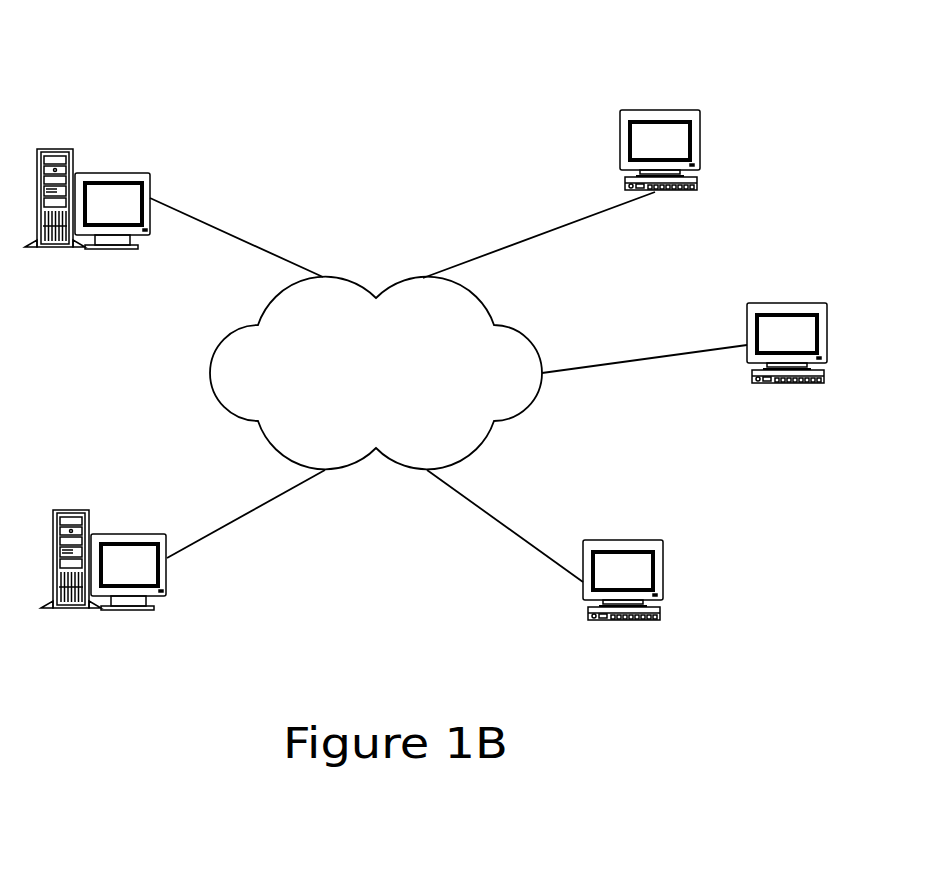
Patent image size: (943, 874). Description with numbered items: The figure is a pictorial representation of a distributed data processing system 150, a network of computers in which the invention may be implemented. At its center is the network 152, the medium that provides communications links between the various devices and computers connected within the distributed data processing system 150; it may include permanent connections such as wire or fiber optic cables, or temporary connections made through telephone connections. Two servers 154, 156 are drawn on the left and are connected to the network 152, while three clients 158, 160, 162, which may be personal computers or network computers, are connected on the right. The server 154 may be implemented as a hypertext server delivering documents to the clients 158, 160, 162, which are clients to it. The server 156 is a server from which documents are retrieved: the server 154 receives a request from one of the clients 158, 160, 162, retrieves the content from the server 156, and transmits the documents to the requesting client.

The distributed data processing system 150 is at (417, 671).
The network 152 is at (398, 386).
The server 154 is at (107, 280).
The server 156 is at (122, 641).
The client 158 is at (678, 93).
The client 160 is at (802, 286).
The client 162 is at (638, 523).